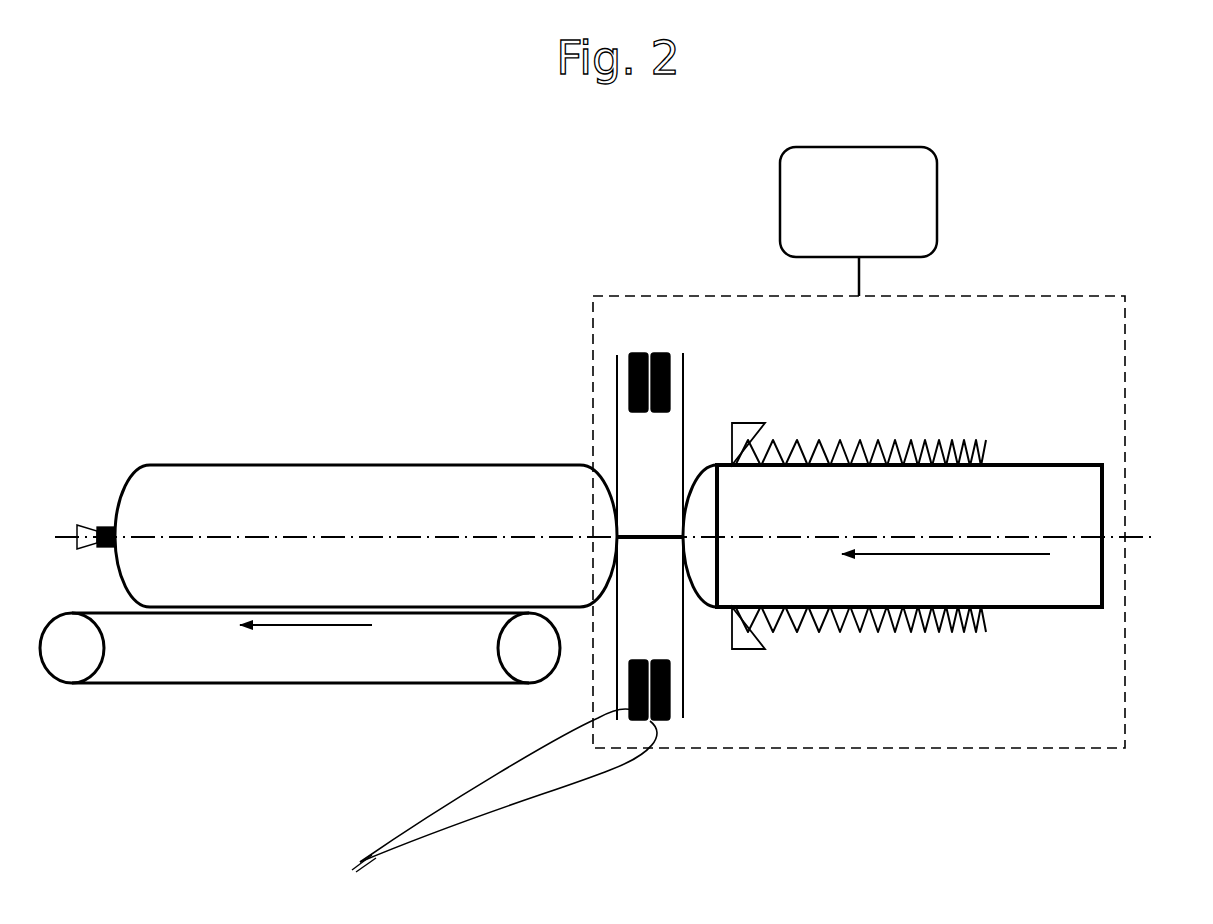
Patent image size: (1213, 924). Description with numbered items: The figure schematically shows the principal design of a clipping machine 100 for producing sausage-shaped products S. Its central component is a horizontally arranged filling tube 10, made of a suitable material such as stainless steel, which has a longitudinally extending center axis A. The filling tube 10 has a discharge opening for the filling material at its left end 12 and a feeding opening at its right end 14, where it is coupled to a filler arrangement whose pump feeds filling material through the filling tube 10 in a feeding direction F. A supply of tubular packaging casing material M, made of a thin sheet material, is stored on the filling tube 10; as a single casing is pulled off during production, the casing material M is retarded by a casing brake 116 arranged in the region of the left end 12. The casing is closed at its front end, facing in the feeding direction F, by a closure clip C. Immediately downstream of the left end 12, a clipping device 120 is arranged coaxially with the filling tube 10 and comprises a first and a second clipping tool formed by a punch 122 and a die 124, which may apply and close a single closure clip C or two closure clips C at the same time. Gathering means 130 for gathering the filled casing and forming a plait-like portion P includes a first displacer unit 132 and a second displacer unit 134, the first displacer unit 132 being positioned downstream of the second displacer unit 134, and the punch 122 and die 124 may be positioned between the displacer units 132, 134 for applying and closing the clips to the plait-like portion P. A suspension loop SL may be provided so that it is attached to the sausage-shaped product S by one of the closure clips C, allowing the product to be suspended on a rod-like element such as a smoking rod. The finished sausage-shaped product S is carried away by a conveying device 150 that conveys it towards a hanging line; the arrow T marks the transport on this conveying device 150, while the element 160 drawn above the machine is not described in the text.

The clipping machine 100 is at (1077, 292).
The controller 160 is at (858, 221).
The clipping device 120 is at (608, 530).
The punch 122 is at (668, 382).
The die 124 is at (631, 697).
The first displacer unit 132 is at (683, 630).
The second displacer unit 134 is at (619, 603).
The gathering means 130 is at (931, 599).
The filling tube 10 is at (1028, 465).
The left end 12 is at (722, 566).
The right end 14 is at (1103, 500).
The casing brake 116 is at (757, 425).
The conveying device 150 is at (325, 702).
The plait-like portion P is at (646, 531).
The sausage-shaped product S is at (348, 465).
The closure clip C is at (96, 529).
The transport direction T is at (306, 643).
The feeding direction F is at (946, 573).
The tubular packaging casing material M is at (935, 440).
The center axis A is at (1153, 541).
The suspension loop SL is at (578, 787).